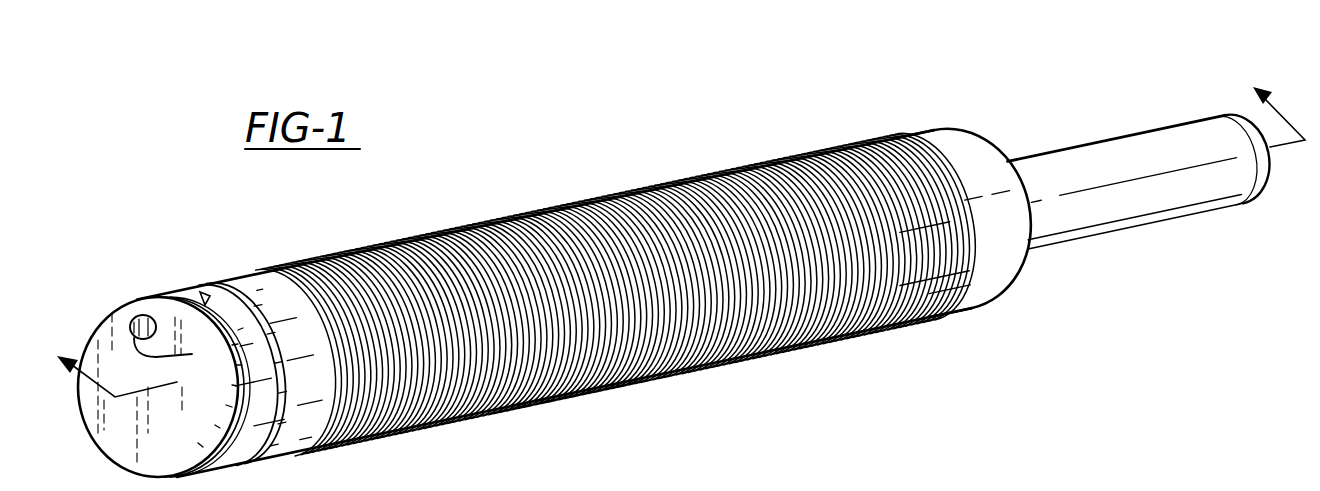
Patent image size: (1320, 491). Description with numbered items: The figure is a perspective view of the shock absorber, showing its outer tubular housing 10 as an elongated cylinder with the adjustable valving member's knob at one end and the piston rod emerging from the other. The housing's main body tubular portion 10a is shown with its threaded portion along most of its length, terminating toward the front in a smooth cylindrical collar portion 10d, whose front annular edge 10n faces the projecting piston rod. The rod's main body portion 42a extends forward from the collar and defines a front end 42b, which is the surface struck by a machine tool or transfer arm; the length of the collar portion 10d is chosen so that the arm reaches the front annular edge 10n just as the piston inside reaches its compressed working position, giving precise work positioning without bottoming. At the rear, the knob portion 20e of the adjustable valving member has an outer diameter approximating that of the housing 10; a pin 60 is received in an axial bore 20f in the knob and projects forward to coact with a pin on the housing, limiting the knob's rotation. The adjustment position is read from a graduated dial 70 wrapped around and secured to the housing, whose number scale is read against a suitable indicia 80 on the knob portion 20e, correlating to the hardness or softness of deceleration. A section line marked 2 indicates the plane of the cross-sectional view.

The outer tubular housing 10 is at (541, 193).
The main body tubular portion 10a is at (688, 172).
The front end smooth cylindrical collar portion 10d is at (920, 128).
The front annular edge of collar portion 10n is at (1021, 268).
The main body portion of piston rod 42a is at (1090, 152).
The front end of piston rod 42b is at (1266, 196).
The pin 60 is at (146, 313).
The graduated dial 70 is at (213, 280).
The indicia 80 is at (188, 282).
The knob portion 20e is at (161, 294).
The axial bore 20f is at (178, 358).
The section line 2- 2 is at (677, 228).